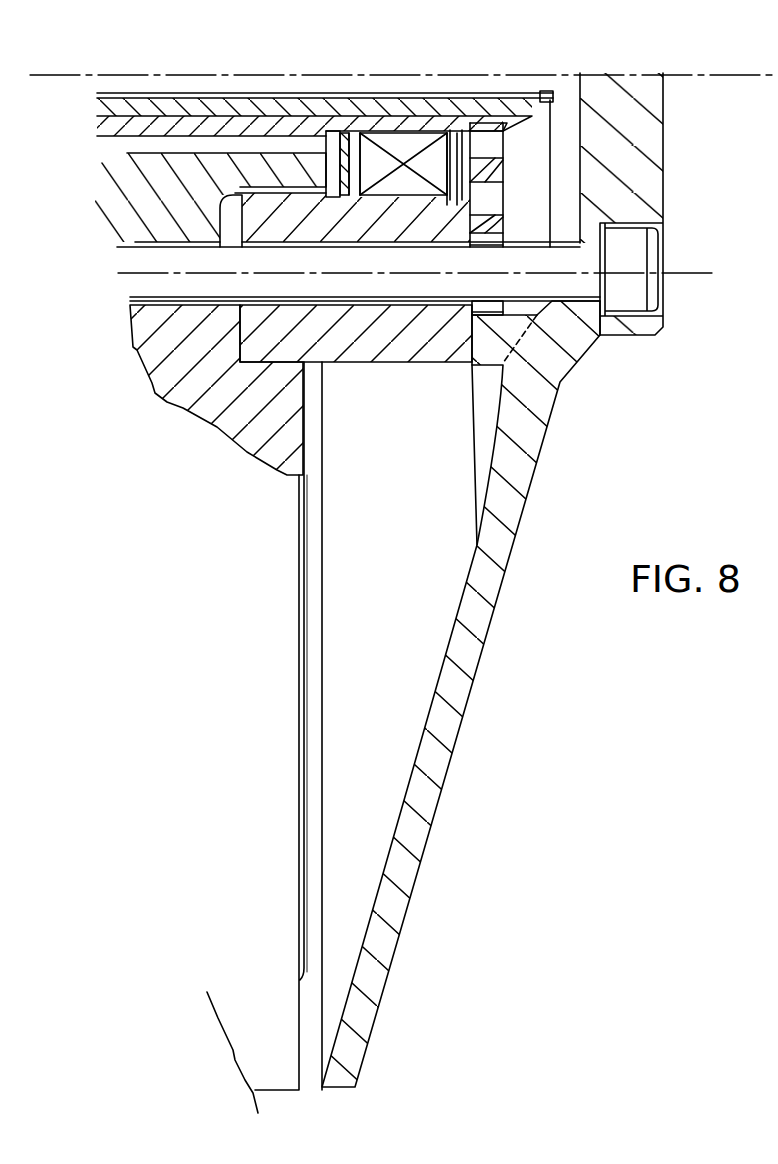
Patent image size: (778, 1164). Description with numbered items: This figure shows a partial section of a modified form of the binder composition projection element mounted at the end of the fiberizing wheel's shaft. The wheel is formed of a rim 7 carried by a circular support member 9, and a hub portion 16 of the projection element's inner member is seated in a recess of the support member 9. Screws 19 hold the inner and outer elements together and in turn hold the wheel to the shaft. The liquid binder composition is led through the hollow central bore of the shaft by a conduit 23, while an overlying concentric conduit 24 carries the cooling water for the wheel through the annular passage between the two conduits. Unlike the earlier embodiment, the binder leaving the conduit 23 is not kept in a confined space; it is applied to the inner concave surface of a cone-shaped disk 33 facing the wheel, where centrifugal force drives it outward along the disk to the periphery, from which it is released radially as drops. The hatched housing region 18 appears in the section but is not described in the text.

The rim 7 is at (280, 745).
The support member 9 is at (288, 443).
The hub portion 16 is at (383, 347).
The housing 18 is at (232, 163).
The screws 19 is at (571, 288).
The conduit 23 is at (500, 100).
The conduit 24 is at (368, 123).
The cone-shaped disk 33 is at (462, 703).